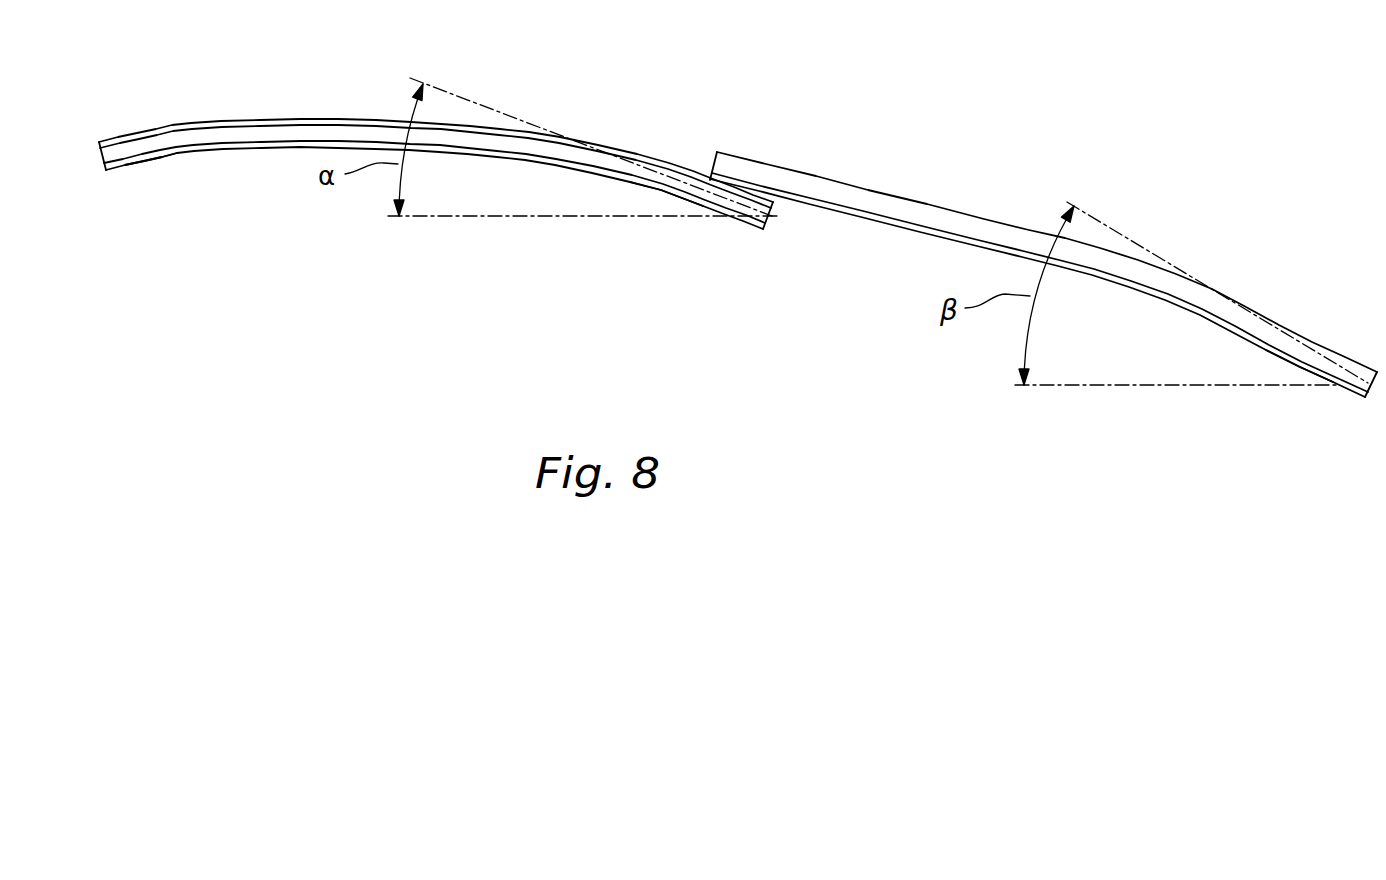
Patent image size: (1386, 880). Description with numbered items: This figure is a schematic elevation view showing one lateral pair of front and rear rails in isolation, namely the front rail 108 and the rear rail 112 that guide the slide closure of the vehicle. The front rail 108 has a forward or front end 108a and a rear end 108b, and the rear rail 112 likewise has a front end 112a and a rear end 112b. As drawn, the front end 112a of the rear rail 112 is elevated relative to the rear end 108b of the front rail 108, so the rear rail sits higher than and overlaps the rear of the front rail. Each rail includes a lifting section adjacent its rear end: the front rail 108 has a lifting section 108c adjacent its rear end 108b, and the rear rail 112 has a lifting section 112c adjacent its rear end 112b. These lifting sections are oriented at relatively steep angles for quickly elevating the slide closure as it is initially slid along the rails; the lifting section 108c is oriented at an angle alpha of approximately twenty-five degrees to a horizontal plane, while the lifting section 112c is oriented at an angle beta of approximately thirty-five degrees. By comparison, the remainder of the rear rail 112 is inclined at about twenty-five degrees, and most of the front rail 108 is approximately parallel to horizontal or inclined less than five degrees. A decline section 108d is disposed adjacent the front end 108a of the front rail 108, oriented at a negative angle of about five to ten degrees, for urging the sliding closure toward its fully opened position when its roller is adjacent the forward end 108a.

The front rail 108 is at (310, 121).
The front end of front rail 108a is at (108, 155).
The rear end of front rail 108b is at (770, 226).
The lifting section of front rail 108c is at (683, 184).
The decline section of front rail 108d is at (155, 148).
The rear rail 112 is at (968, 212).
The front end of rear rail 112a is at (719, 158).
The rear end of rear rail 112b is at (1364, 397).
The lifting section of rear rail 112c is at (1303, 353).